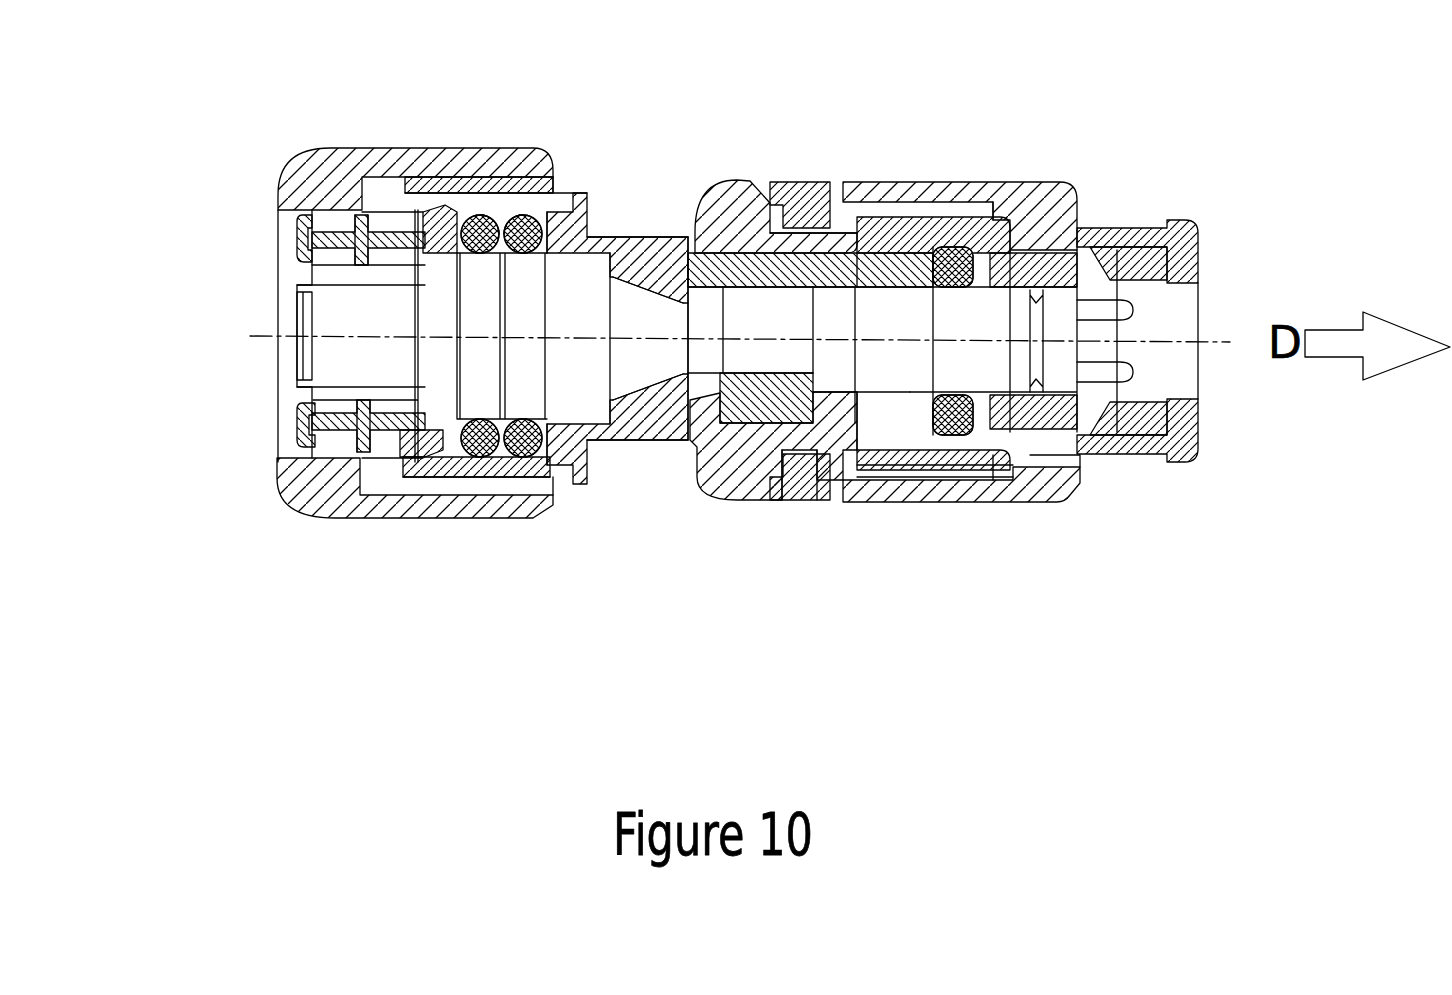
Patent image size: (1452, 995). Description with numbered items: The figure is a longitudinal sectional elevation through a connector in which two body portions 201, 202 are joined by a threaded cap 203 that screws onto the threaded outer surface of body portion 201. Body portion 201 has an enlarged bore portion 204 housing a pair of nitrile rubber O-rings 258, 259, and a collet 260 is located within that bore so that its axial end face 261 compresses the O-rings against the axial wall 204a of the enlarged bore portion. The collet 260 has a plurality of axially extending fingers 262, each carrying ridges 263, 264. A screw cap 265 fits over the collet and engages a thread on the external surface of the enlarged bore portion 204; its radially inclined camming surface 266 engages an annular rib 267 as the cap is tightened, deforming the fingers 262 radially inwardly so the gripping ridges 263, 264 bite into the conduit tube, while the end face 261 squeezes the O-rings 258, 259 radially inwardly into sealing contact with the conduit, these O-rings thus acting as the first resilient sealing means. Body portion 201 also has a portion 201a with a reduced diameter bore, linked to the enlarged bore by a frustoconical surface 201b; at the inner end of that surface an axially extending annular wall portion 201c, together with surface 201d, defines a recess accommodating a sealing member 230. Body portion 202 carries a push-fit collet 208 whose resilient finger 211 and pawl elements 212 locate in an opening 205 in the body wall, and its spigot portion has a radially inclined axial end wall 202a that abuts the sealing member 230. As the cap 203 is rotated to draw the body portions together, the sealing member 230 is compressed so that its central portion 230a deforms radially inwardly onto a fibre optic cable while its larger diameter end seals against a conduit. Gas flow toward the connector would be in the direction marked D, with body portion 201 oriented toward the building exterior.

The body portion 201 is at (635, 232).
The reduced diameter bore portion 201a is at (696, 300).
The frustoconical surface 201b is at (582, 232).
The axially extending annular wall portion 201c is at (713, 300).
The surface 201d is at (770, 450).
The body portion 202 is at (890, 267).
The radially inclined axial end wall 202a is at (836, 210).
The threaded cap 203 is at (957, 493).
The enlarged bore portion 204 is at (502, 207).
The axial wall 204a is at (573, 460).
The opening 205 is at (1062, 237).
The push-fit collet 208 is at (1200, 247).
The resilient finger 211 is at (1135, 250).
The pawl elements 212 is at (1030, 232).
The sealing member 230 is at (833, 427).
The central portion 230a is at (770, 360).
The O-ring 258 is at (473, 455).
The O-ring 259 is at (530, 457).
The collet 260 is at (307, 425).
The axial end face 261 is at (403, 462).
The axially extending fingers 262 is at (330, 352).
The ridge 263 is at (302, 318).
The ridge 264 is at (355, 312).
The screw cap 265 is at (395, 160).
The radially inclined camming surface 266 is at (315, 232).
The annular rib 267 is at (352, 213).